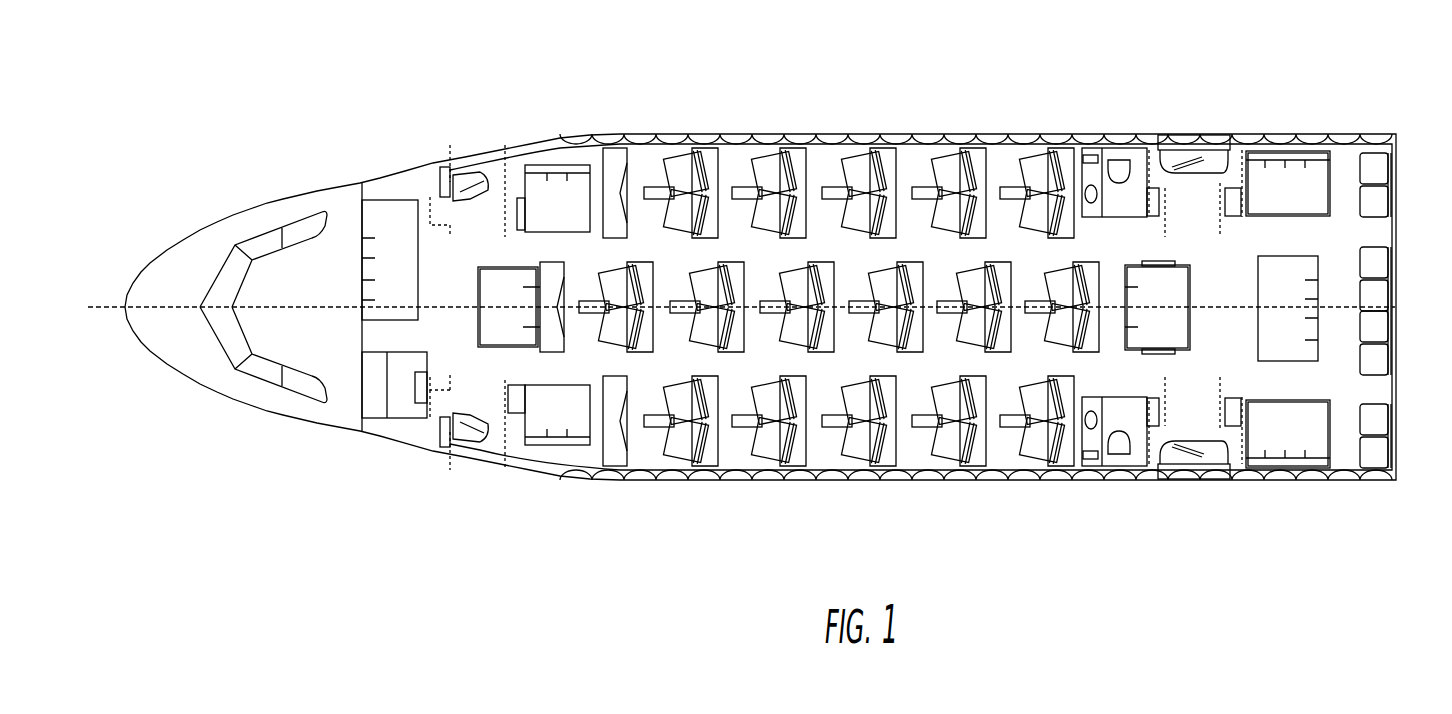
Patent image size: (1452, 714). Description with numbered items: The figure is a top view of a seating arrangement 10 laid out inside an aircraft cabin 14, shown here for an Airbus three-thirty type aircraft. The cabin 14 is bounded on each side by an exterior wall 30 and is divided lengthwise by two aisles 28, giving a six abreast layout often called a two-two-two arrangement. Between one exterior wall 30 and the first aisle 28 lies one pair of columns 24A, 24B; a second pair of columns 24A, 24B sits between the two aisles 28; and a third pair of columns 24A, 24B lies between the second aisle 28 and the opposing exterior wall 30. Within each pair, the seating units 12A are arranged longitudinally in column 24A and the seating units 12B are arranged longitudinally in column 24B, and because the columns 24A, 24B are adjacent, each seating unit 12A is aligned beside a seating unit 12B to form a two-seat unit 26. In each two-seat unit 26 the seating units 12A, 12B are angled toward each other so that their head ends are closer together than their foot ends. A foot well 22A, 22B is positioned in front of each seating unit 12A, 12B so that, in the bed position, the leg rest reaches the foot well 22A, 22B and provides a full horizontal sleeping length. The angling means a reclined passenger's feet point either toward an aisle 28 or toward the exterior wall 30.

The seating arrangement 10 is at (1208, 90).
The seating unit 12A is at (687, 174).
The seating unit 12B is at (693, 210).
The cabin 14 is at (1357, 138).
The foot well 22A is at (978, 157).
The foot well 22B is at (987, 227).
The column 24A is at (653, 170).
The column 24B is at (663, 227).
The two-seat unit 26 is at (957, 437).
The aisle 28 is at (1082, 253).
The exterior wall 30 is at (709, 140).